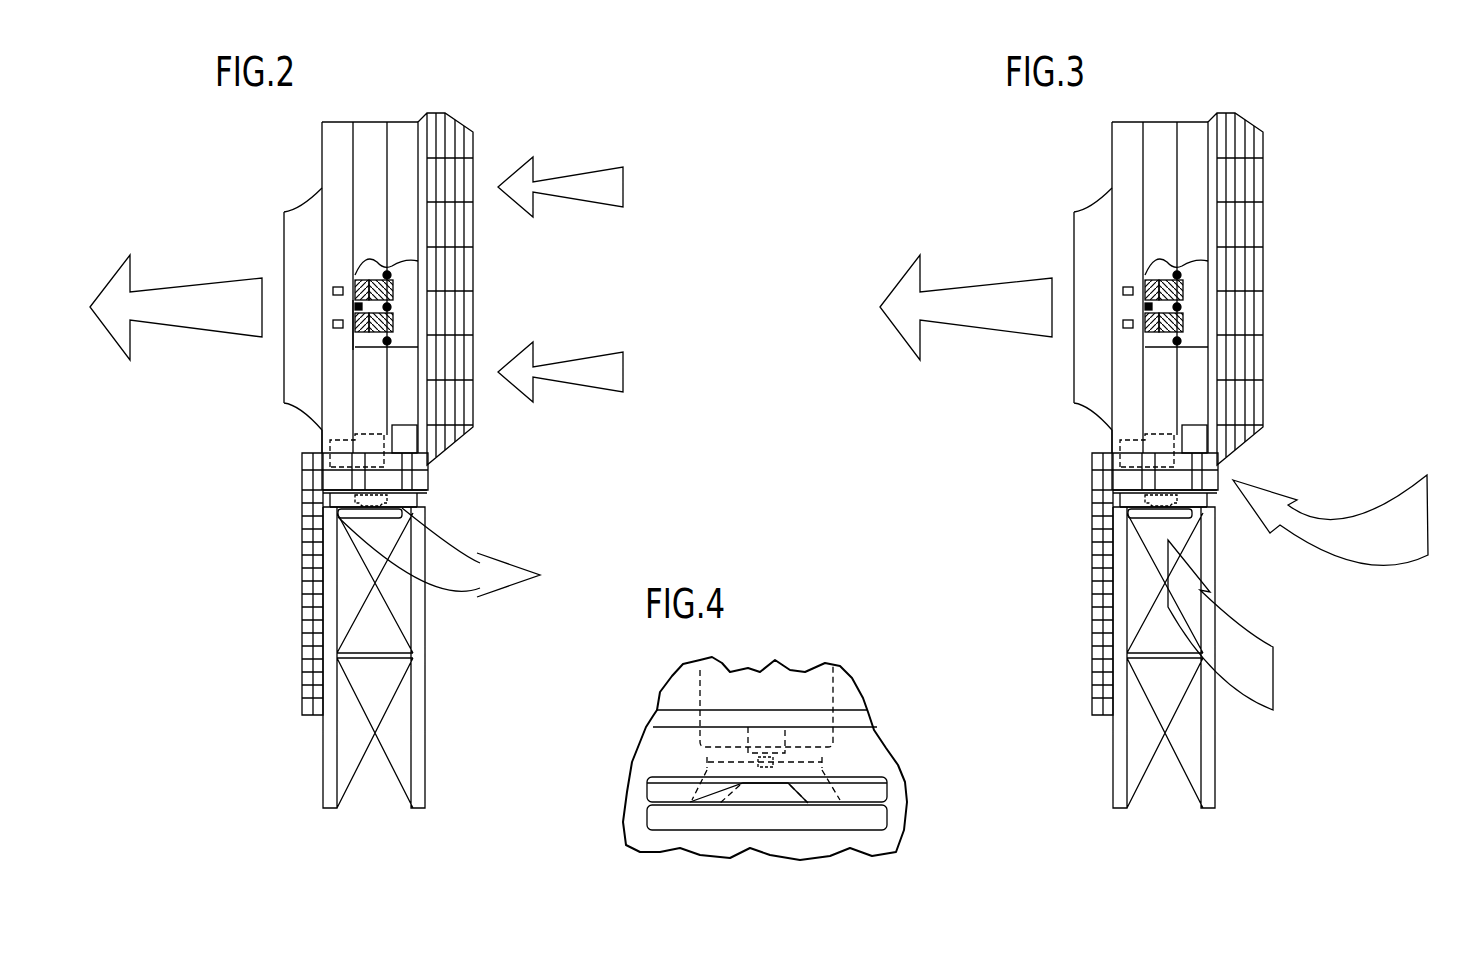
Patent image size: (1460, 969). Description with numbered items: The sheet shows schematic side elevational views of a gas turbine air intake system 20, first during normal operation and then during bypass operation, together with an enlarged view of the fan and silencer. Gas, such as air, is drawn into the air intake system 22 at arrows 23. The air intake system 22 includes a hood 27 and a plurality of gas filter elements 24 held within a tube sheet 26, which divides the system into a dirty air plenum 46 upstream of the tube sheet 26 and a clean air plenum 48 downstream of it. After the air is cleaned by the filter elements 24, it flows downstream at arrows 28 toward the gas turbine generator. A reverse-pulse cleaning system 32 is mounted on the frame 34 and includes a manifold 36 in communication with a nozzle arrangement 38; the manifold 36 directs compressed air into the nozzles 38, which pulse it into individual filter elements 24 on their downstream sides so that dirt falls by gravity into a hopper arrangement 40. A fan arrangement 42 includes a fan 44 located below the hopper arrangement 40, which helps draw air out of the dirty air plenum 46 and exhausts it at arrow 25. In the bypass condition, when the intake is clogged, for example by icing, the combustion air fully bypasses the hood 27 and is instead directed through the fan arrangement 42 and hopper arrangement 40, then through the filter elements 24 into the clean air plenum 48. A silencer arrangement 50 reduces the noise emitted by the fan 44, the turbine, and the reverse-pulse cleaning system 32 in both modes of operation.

In FIG. 2, the gas turbine air intake system 20 is at (446, 60).
In FIG. 3, the gas turbine air intake system 20 is at (1188, 63).
In FIG. 2, the air intake system 22 is at (517, 120).
In FIG. 3, the air intake system 22 is at (1288, 264).
In FIG. 2, the arrows 23 is at (630, 187).
In FIG. 3, the arrows 23 is at (1298, 586).
In FIG. 2, the gas filter elements 24 is at (375, 356).
In FIG. 3, the gas filter elements 24 is at (1176, 379).
In FIG. 2, the arrow 25 is at (450, 555).
In FIG. 2, the tube sheet 26 is at (353, 170).
In FIG. 3, the tube sheet 26 is at (1110, 306).
In FIG. 2, the hood 27 is at (458, 120).
In FIG. 3, the hood 27 is at (1253, 265).
In FIG. 2, the arrows 28 is at (203, 326).
In FIG. 3, the arrows 28 is at (966, 309).
In FIG. 2, the reverse-pulse cleaning system 32 is at (332, 340).
In FIG. 2, the frame 34 is at (322, 441).
In FIG. 3, the frame 34 is at (1085, 436).
In FIG. 2, the manifold 36 is at (390, 306).
In FIG. 3, the manifold 36 is at (1225, 302).
In FIG. 2, the nozzle arrangement 38 is at (333, 290).
In FIG. 3, the nozzle arrangement 38 is at (1106, 306).
In FIG. 2, the hopper arrangement 40 is at (328, 506).
In FIG. 3, the hopper arrangement 40 is at (1134, 509).
In FIG. 2, the fan arrangement 42 is at (388, 502).
In FIG. 3, the fan arrangement 42 is at (1129, 465).
In FIG. 4, the fan 44 is at (822, 761).
In FIG. 2, the dirty air plenum 46 is at (378, 143).
In FIG. 3, the dirty air plenum 46 is at (1188, 244).
In FIG. 2, the clean air plenum 48 is at (295, 227).
In FIG. 3, the clean air plenum 48 is at (1071, 309).
In FIG. 2, the silencer arrangement 50 is at (375, 510).
In FIG. 3, the silencer arrangement 50 is at (1159, 543).
In FIG. 4, the silencer arrangement 50 is at (632, 805).